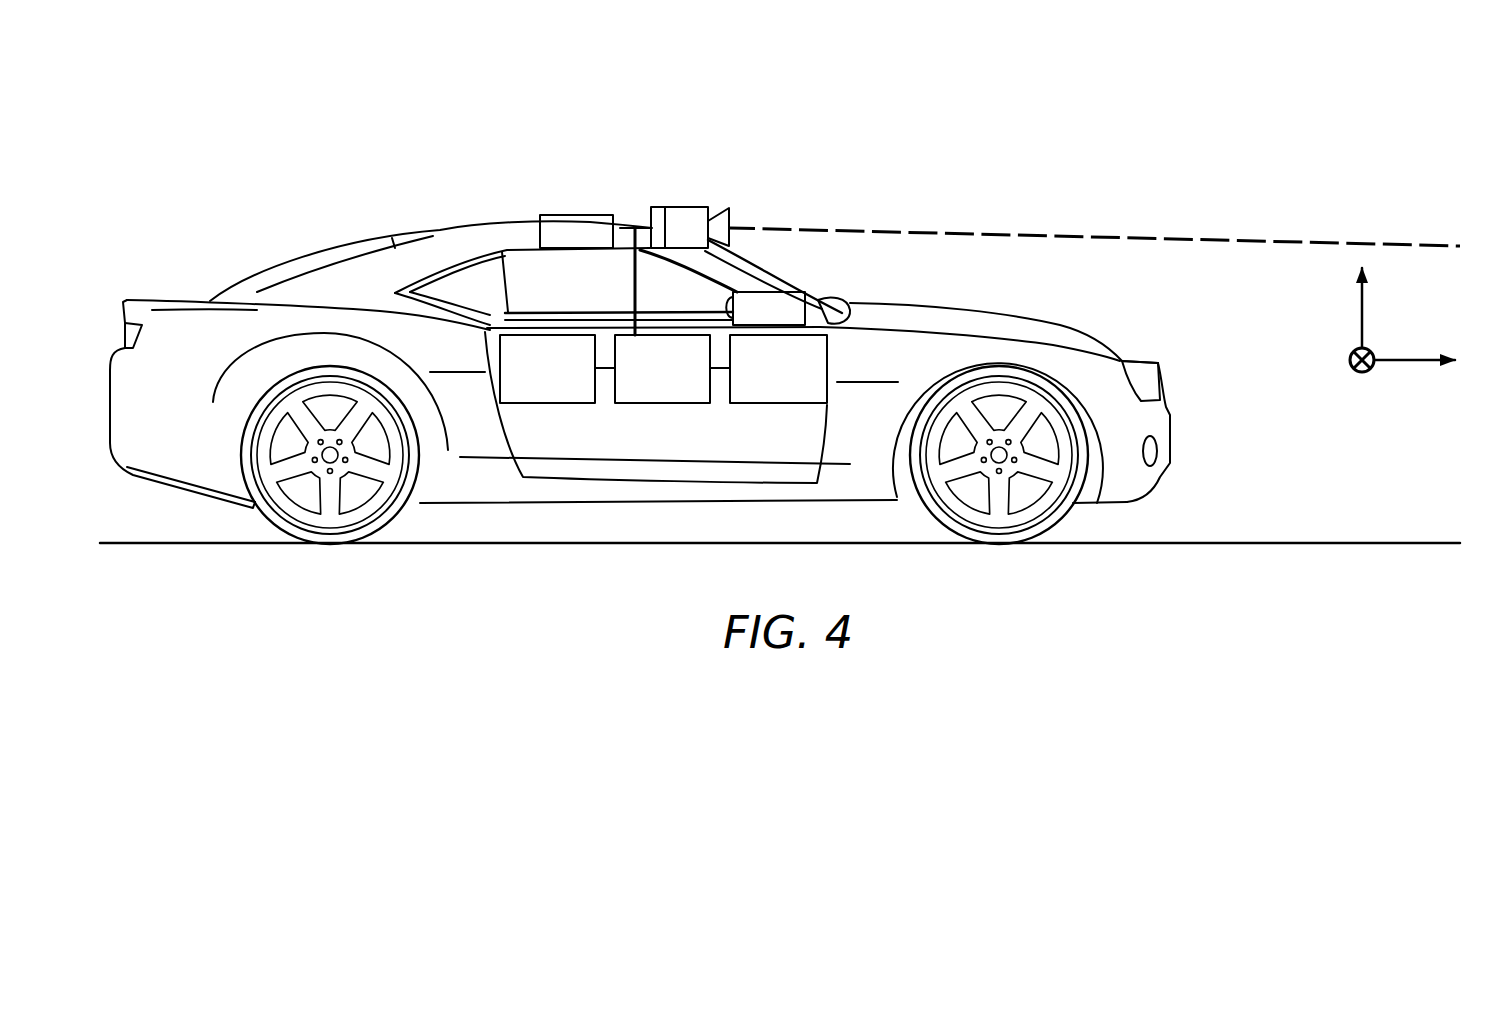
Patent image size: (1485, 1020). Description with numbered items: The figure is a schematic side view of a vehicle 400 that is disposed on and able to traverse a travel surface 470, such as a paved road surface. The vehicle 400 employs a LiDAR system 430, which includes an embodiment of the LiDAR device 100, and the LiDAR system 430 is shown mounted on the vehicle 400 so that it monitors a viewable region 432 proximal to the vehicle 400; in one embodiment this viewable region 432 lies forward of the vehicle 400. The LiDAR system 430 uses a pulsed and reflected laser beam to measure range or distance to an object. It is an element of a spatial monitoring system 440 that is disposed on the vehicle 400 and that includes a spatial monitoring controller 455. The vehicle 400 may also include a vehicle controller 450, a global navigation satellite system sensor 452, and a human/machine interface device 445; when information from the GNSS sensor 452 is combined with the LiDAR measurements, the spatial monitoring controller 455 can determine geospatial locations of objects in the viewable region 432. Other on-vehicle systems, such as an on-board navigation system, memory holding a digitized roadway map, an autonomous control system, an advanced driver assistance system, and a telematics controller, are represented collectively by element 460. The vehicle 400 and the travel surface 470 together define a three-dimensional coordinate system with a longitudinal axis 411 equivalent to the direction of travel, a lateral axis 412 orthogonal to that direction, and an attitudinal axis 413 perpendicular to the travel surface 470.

The LiDAR device 100 is at (720, 200).
The vehicle 400 is at (1052, 308).
The longitudinal axis 411 is at (1419, 383).
The lateral axis 412 is at (1358, 380).
The attitudinal axis 413 is at (1336, 307).
The LiDAR system 430 is at (674, 199).
The viewable region 432 is at (922, 232).
The spatial monitoring system 440 is at (650, 215).
The human/machine interface (HMI) device 445 is at (829, 297).
The vehicle controller 450 is at (557, 369).
The global navigation satellite system (GNSS) sensor 452 is at (538, 216).
The spatial monitoring controller 455 is at (672, 369).
The other on-vehicle systems 460 is at (778, 369).
The travel surface 470 is at (1250, 540).